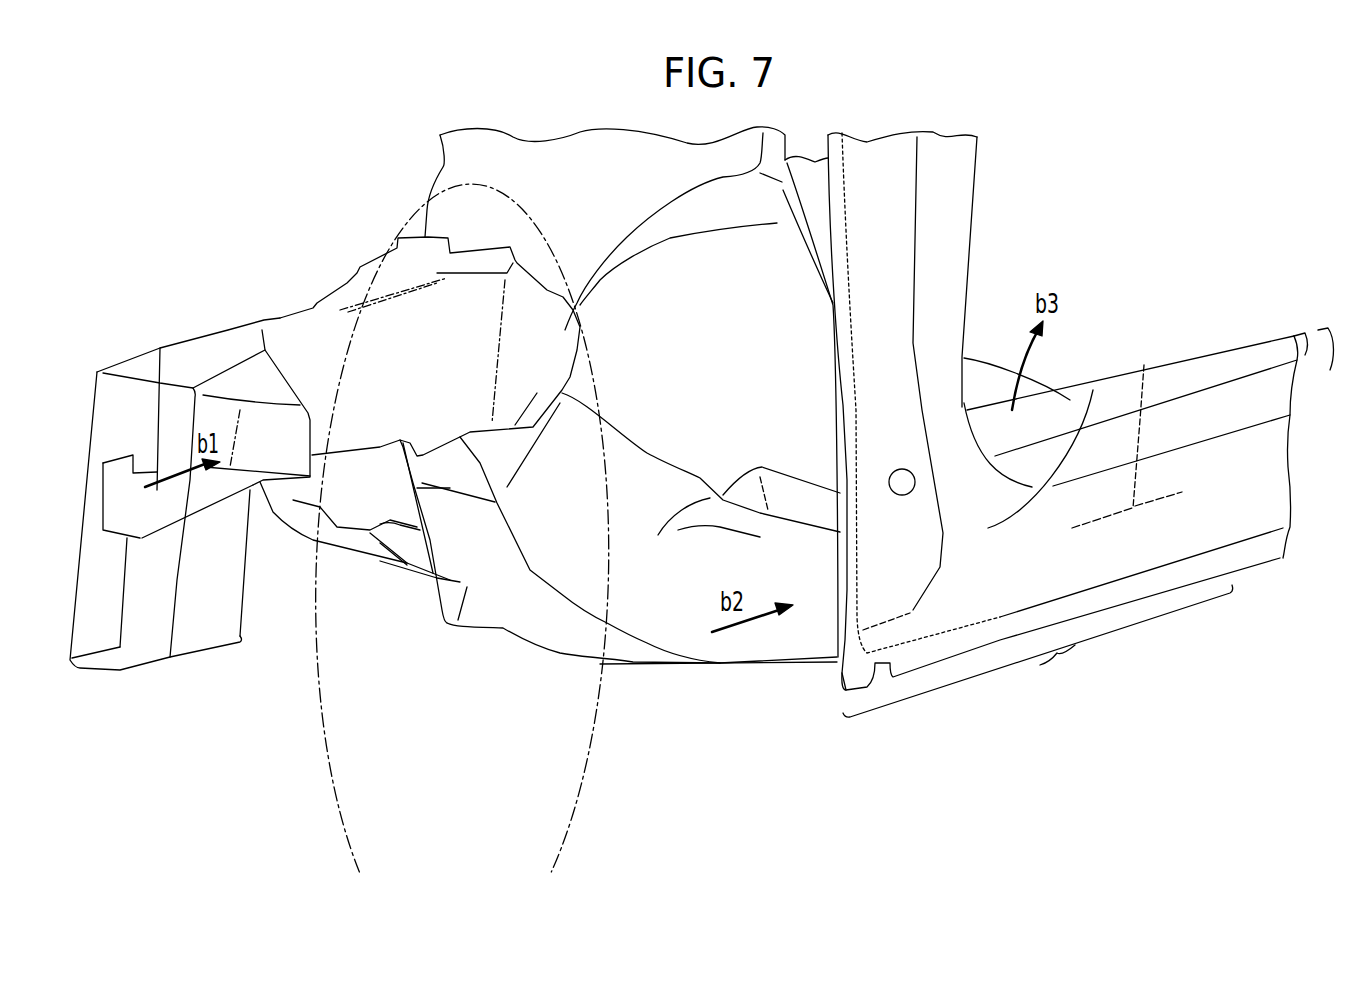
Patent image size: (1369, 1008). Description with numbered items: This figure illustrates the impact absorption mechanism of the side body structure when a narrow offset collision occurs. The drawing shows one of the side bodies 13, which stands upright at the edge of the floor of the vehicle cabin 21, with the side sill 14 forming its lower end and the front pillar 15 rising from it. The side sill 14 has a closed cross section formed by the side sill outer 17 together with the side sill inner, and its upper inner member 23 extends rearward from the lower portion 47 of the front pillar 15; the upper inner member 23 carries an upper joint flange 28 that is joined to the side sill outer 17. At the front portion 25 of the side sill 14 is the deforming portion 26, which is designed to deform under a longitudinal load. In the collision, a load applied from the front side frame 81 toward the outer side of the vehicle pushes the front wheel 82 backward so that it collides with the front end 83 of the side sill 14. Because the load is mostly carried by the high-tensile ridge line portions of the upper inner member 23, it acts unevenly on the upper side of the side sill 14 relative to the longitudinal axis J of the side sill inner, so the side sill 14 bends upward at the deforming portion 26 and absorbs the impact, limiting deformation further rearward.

The side body 13 is at (998, 155).
The side sill 14 is at (1172, 353).
The front pillar 15 is at (973, 227).
The side sill outer 17 is at (1233, 495).
The vehicle cabin 21 is at (1190, 153).
The upper inner member 23 is at (1318, 303).
The front portion 25 is at (1086, 443).
The deforming portion 26 is at (1038, 651).
The upper joint flange 28 is at (1307, 345).
The lower portion 47 is at (897, 440).
The front side frame 81 is at (304, 340).
The front wheel 82 is at (577, 807).
The front end 83 is at (860, 593).
The axis J is at (1127, 431).